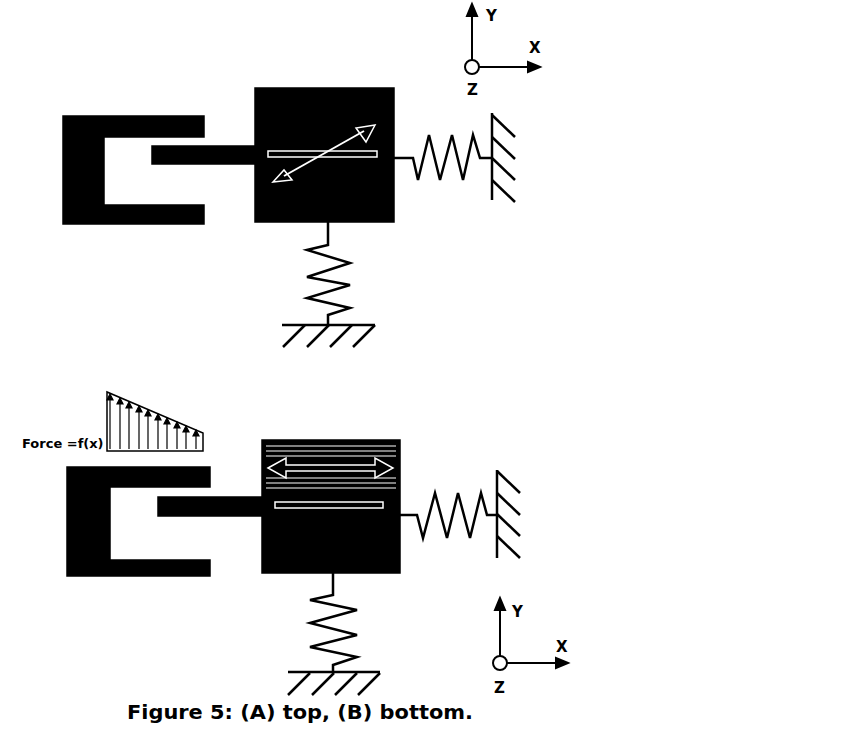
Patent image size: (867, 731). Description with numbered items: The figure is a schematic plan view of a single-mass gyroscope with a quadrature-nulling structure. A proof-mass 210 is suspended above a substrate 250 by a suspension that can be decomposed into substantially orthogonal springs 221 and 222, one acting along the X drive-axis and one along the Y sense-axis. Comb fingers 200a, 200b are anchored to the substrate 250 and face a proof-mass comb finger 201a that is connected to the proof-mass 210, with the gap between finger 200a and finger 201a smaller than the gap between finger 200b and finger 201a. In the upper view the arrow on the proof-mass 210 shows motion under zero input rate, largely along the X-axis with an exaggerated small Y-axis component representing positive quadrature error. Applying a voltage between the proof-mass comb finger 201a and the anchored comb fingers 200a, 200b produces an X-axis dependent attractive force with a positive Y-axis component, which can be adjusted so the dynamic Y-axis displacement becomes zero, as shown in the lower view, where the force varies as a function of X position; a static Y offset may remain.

In FIG. 5A, the comb finger 200a is at (147, 123).
In FIG. 5B, the comb finger 200a is at (202, 477).
In FIG. 5A, the comb finger 200b is at (147, 217).
In FIG. 5B, the comb finger 200b is at (147, 573).
In FIG. 5A, the proof-mass comb finger 201a is at (228, 150).
In FIG. 5B, the proof-mass comb finger 201a is at (217, 508).
In FIG. 5A, the proof-mass 210 is at (347, 102).
In FIG. 5B, the proof-mass 210 is at (375, 452).
In FIG. 5A, the spring 221 is at (452, 138).
In FIG. 5A, the spring 222 is at (307, 277).
In FIG. 5A, the substrate 250 is at (422, 245).